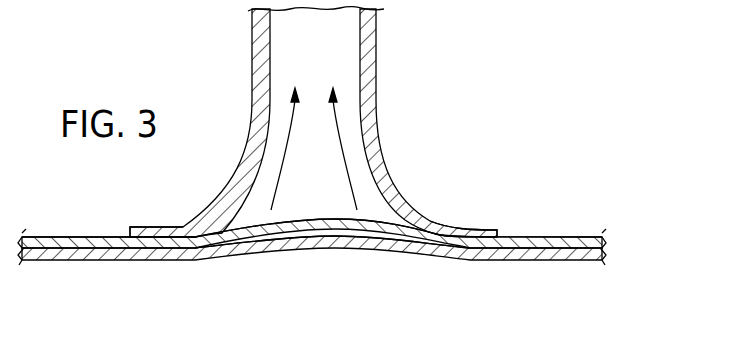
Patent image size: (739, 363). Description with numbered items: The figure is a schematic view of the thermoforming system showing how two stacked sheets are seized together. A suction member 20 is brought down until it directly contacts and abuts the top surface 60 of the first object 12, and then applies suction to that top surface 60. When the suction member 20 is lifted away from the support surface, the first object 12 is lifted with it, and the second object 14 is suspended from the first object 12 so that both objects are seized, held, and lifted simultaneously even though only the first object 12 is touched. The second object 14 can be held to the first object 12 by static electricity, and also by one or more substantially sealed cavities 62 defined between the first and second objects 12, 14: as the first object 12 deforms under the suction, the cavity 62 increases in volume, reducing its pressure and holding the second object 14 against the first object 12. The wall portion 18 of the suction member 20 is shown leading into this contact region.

The tube 18 is at (390, 56).
The suction member 20 is at (408, 213).
The first object 12 is at (572, 242).
The second object 14 is at (578, 259).
The top surface 60 is at (80, 237).
The sealed cavity 62 is at (330, 236).